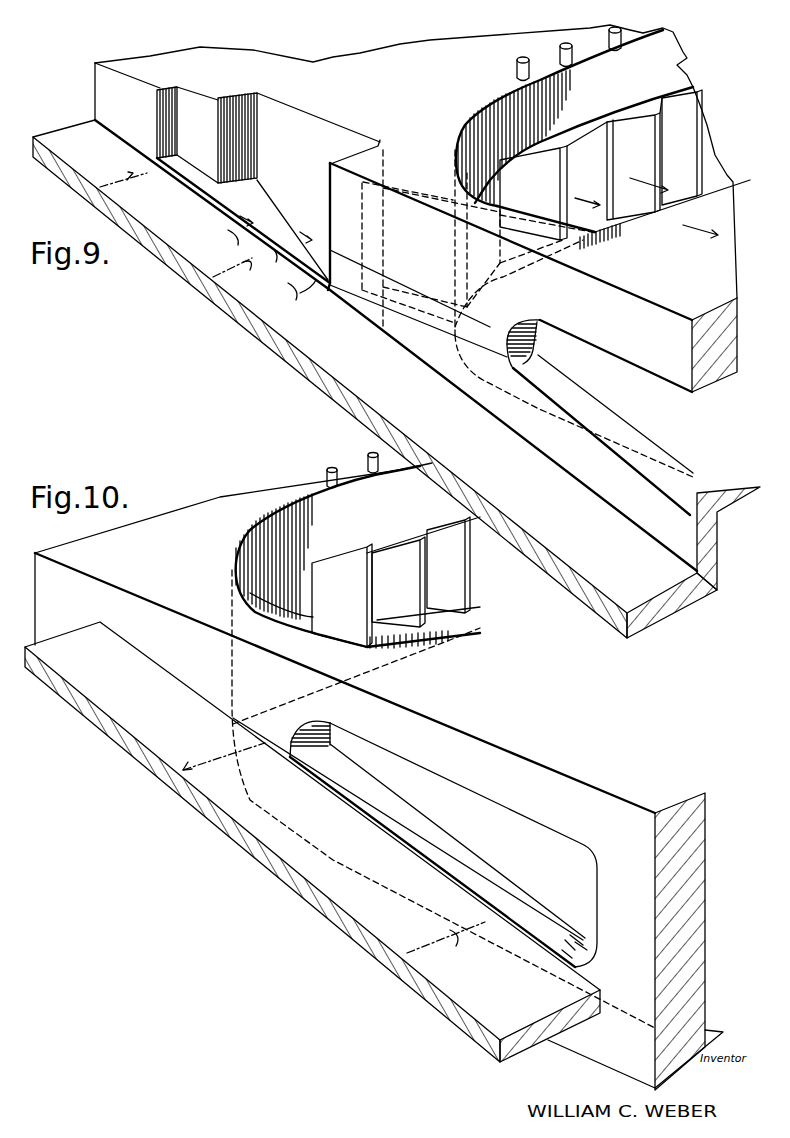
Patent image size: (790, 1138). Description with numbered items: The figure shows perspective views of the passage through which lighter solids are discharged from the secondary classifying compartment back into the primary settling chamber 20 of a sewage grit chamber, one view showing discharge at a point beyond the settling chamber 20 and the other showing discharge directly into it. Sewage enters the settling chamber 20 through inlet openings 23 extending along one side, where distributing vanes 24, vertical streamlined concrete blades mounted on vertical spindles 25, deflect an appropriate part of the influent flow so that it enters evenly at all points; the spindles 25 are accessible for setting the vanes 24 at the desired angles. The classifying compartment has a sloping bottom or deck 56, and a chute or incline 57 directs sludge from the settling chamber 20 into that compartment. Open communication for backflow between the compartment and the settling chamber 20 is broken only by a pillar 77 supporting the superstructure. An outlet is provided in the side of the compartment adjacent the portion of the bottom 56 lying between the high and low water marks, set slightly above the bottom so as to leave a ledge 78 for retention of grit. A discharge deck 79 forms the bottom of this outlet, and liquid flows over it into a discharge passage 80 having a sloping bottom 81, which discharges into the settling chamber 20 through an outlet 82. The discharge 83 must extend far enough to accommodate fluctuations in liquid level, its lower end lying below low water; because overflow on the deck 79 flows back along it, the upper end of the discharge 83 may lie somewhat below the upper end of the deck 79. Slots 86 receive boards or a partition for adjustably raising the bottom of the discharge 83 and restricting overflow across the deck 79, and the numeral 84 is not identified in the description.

In FIG. 9, the settling chamber 20 is at (416, 270).
In FIG. 10, the settling chamber 20 is at (379, 776).
In FIG. 9, the inlet openings 23 is at (612, 242).
In FIG. 10, the inlet openings 23 is at (457, 583).
In FIG. 9, the distributing vanes 24 is at (573, 172).
In FIG. 10, the distributing vanes 24 is at (383, 553).
In FIG. 9, the vertical spindles 25 is at (606, 42).
In FIG. 10, the vertical spindles 25 is at (353, 445).
In FIG. 9, the sloping bottom or deck 56 is at (375, 379).
In FIG. 10, the sloping bottom or deck 56 is at (312, 842).
In FIG. 9, the chute or incline 57 is at (697, 514).
In FIG. 10, the pillar 77 is at (615, 888).
In FIG. 9, the ledge 78 is at (196, 195).
In FIG. 10, the ledge 78 is at (320, 783).
In FIG. 9, the discharge deck 79 is at (226, 212).
In FIG. 10, the discharge deck 79 is at (385, 814).
In FIG. 9, the discharge passage 80 is at (312, 131).
In FIG. 9, the sloping bottom 81 is at (243, 229).
In FIG. 9, the outlet 82 is at (462, 325).
In FIG. 9, the discharge 83 is at (218, 120).
In FIG. 9, the recess 84 is at (197, 135).
In FIG. 9, the slots 86 is at (168, 88).